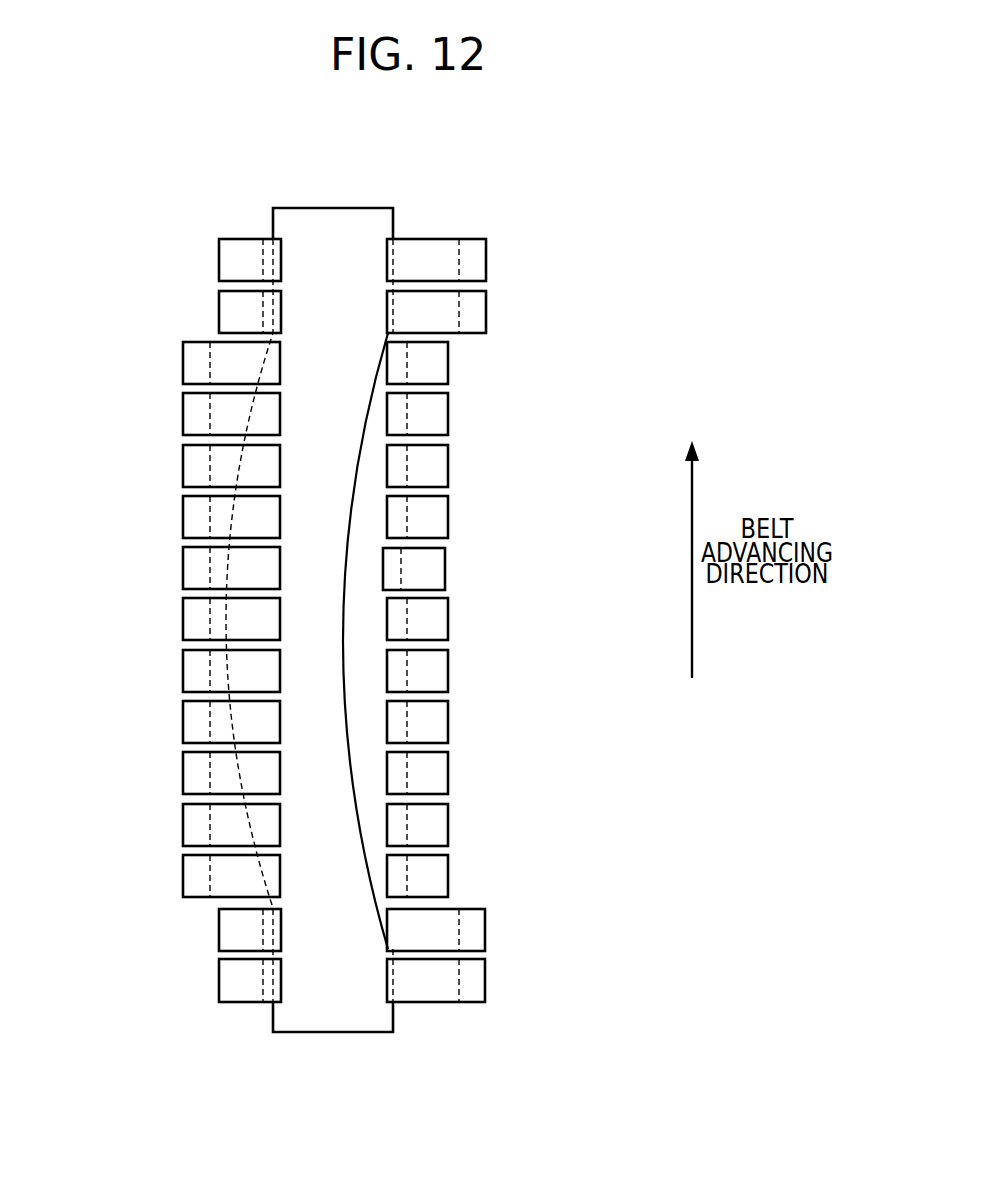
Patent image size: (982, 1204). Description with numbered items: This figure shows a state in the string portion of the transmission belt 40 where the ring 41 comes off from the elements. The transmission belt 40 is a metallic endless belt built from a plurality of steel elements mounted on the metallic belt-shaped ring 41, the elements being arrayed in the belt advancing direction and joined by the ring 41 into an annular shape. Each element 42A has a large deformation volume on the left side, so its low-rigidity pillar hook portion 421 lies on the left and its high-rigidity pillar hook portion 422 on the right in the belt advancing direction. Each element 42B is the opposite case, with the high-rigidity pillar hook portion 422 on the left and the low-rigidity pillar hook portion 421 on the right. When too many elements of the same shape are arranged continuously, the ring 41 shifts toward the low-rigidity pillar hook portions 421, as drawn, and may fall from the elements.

The transmission belt 40 is at (177, 185).
The ring 41 is at (353, 208).
The element 42A is at (158, 347).
The element 42B is at (506, 243).
The low-rigidity pillar hook portion 421 is at (193, 369).
The high-rigidity pillar hook portion 422 is at (442, 365).